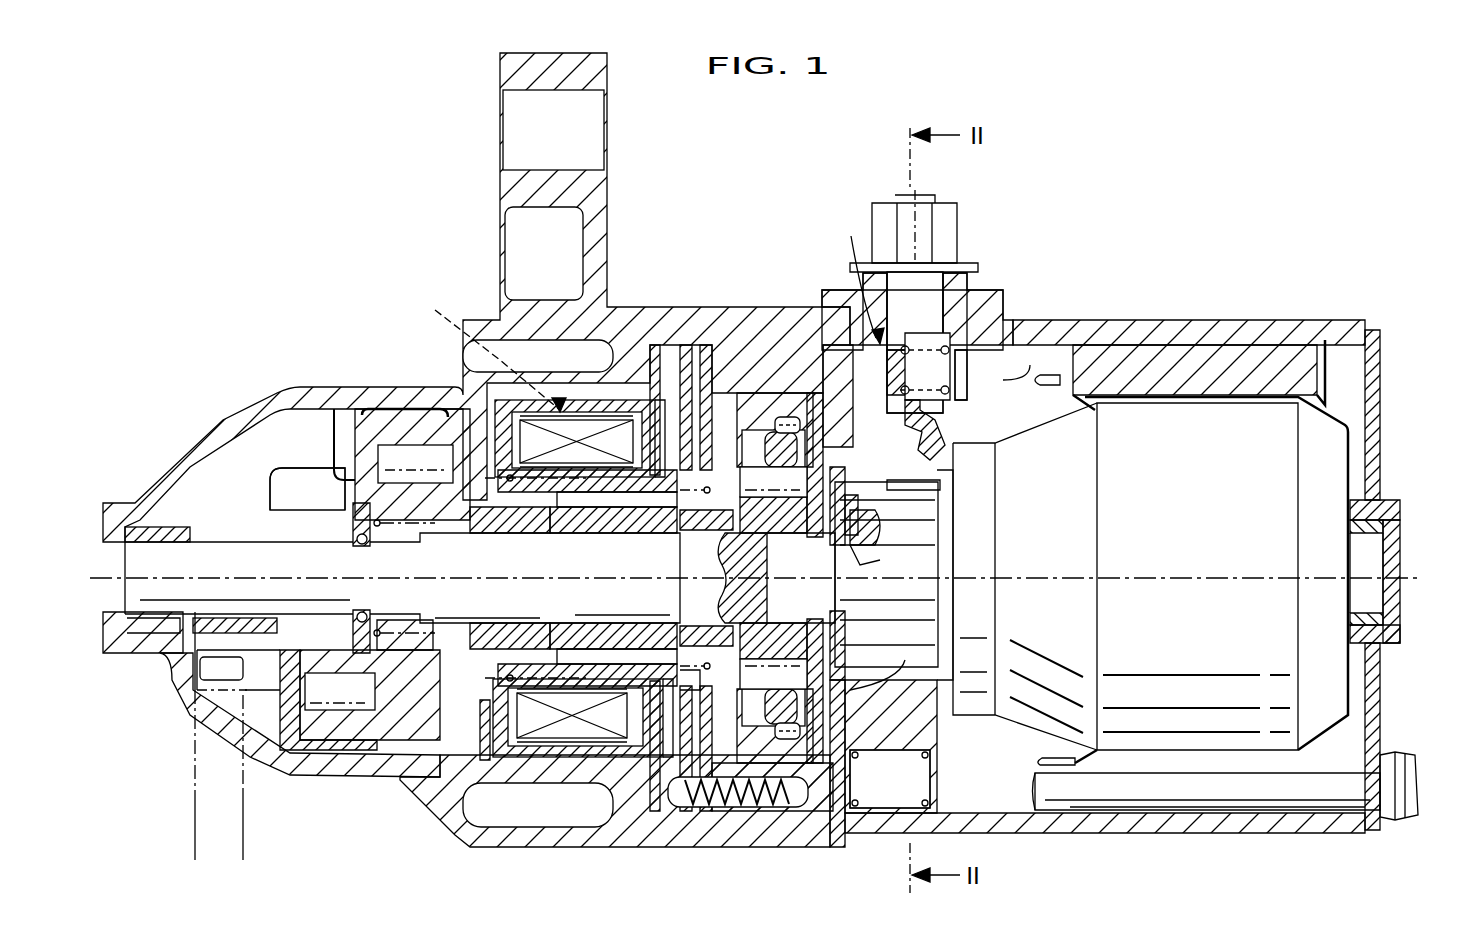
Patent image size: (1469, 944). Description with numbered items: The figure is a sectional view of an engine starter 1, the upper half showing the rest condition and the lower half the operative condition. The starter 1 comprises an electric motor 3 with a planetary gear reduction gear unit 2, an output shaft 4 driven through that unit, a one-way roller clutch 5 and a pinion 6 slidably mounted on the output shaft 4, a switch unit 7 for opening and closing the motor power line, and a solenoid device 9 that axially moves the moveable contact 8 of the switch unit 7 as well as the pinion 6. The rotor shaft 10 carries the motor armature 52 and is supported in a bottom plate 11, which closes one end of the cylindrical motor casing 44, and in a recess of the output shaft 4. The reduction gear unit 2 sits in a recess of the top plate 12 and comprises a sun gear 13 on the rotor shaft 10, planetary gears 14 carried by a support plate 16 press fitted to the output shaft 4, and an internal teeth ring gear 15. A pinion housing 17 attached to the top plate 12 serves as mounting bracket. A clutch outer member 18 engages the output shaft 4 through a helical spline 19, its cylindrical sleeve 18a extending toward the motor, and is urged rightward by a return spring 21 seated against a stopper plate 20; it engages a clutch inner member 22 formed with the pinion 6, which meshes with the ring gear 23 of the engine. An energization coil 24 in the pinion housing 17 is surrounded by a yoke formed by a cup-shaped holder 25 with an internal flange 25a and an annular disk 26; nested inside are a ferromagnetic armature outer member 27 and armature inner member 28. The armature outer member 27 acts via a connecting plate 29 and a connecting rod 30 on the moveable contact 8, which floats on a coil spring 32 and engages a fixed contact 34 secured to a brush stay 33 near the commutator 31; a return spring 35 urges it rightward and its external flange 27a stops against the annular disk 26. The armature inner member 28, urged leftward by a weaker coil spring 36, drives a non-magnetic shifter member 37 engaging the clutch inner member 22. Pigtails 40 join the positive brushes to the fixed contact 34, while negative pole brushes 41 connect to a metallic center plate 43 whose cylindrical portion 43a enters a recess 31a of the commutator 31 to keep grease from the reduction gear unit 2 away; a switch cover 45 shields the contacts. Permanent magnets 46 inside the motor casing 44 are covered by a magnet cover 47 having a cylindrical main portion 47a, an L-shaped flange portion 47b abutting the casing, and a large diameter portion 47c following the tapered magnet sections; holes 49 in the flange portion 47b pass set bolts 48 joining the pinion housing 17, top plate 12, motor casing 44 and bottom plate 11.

The starter 1 is at (1052, 222).
The planetary gear reduction gear unit 2 is at (750, 390).
The electric motor 3 is at (1215, 322).
The output shaft 4 is at (215, 555).
The one-way roller clutch 5 is at (378, 440).
The pinion 6 is at (290, 490).
The switch unit 7 is at (897, 304).
The moveable contact 8 is at (890, 345).
The solenoid device 9 is at (615, 340).
The rotor shaft 10 is at (1380, 558).
The bottom plate 11 is at (1393, 647).
The top plate 12 is at (722, 790).
The sun gear 13 is at (905, 660).
The planetary gears 14 is at (777, 393).
The internal teeth ring gear 15 is at (785, 740).
The support plate 16 is at (750, 695).
The pinion housing 17 is at (428, 780).
The clutch outer member 18 is at (358, 750).
The cylindrical sleeve 18a is at (400, 745).
The helical spline 19 is at (445, 655).
The stopper plate 20 is at (352, 630).
The return spring 21 is at (395, 455).
The clutch inner member 22 is at (262, 775).
The ring gear 23 is at (190, 798).
The energization coil 24 is at (547, 757).
The cup-shaped holder 25 is at (487, 320).
The internal flange 25a is at (470, 690).
The annular disk 26 is at (650, 340).
The armature outer member 27 is at (575, 746).
The external flange 27a is at (660, 760).
The armature inner member 28 is at (605, 645).
The connecting plate 29 is at (684, 340).
The connecting rod 30 is at (720, 340).
The commutator 31 is at (940, 715).
The recess 31a is at (855, 495).
The coil spring 32 is at (925, 335).
The brush stay 33 is at (880, 833).
The fixed contact 34 is at (838, 330).
The return spring 35 is at (493, 348).
The coil spring 36 is at (738, 738).
The shifter member 37 is at (520, 465).
The pigtails 40 is at (975, 428).
The negative pole brushes 41 is at (925, 730).
The center plate 43 is at (838, 770).
The cylindrical portion 43a is at (878, 535).
The motor casing 44 is at (1153, 835).
The switch cover 45 is at (1038, 370).
The permanent magnets 46 is at (1292, 320).
The magnet cover 47 is at (1345, 385).
The cylindrical main portion 47a is at (1172, 375).
The flange portion 47b is at (1350, 330).
The large diameter portion 47c is at (1068, 370).
The set bolts 48 is at (1245, 807).
The holes 49 is at (1332, 800).
The motor armature 52 is at (1265, 455).